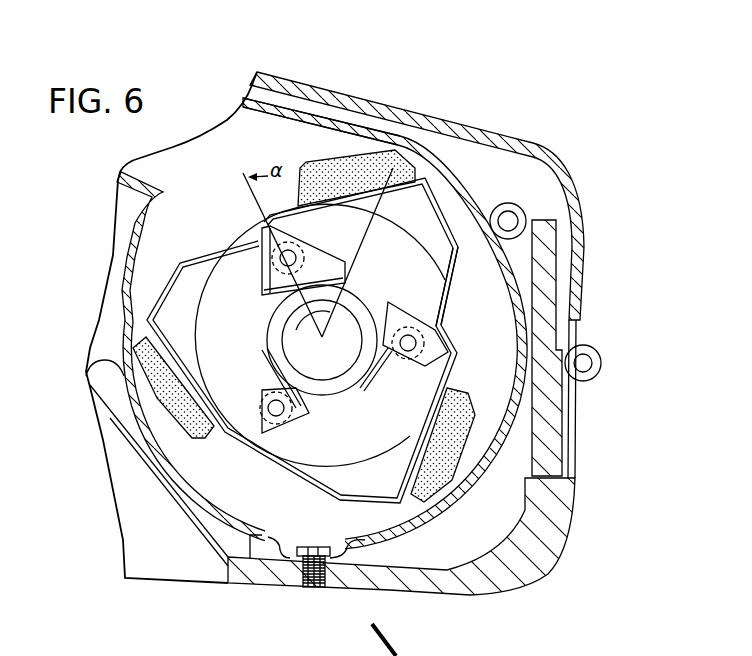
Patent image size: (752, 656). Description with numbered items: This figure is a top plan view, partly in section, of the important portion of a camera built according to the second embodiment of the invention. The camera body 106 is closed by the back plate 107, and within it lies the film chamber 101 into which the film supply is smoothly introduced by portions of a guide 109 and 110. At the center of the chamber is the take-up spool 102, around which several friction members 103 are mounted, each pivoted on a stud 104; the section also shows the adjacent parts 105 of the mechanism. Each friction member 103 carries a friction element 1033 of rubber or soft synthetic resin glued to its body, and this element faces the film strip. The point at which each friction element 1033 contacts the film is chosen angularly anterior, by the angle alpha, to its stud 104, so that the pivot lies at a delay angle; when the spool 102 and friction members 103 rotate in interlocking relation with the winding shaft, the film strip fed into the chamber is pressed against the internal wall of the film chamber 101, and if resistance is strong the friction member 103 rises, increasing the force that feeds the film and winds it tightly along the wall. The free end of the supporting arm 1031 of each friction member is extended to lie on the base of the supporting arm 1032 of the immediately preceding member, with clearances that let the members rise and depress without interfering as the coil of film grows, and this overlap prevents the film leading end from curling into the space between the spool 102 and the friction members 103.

The film chamber 101 is at (521, 311).
The spool 102 is at (397, 277).
The friction member 103 is at (412, 190).
The stud 104 is at (290, 248).
The lever arm 105 is at (336, 276).
The camera body 106 is at (184, 572).
The back plate 107 is at (470, 125).
The guide portion 109 is at (125, 271).
The guide portion 110 is at (272, 112).
The supporting arm 1031 is at (447, 296).
The supporting arm 1032 is at (450, 350).
The friction element 1033 is at (356, 162).